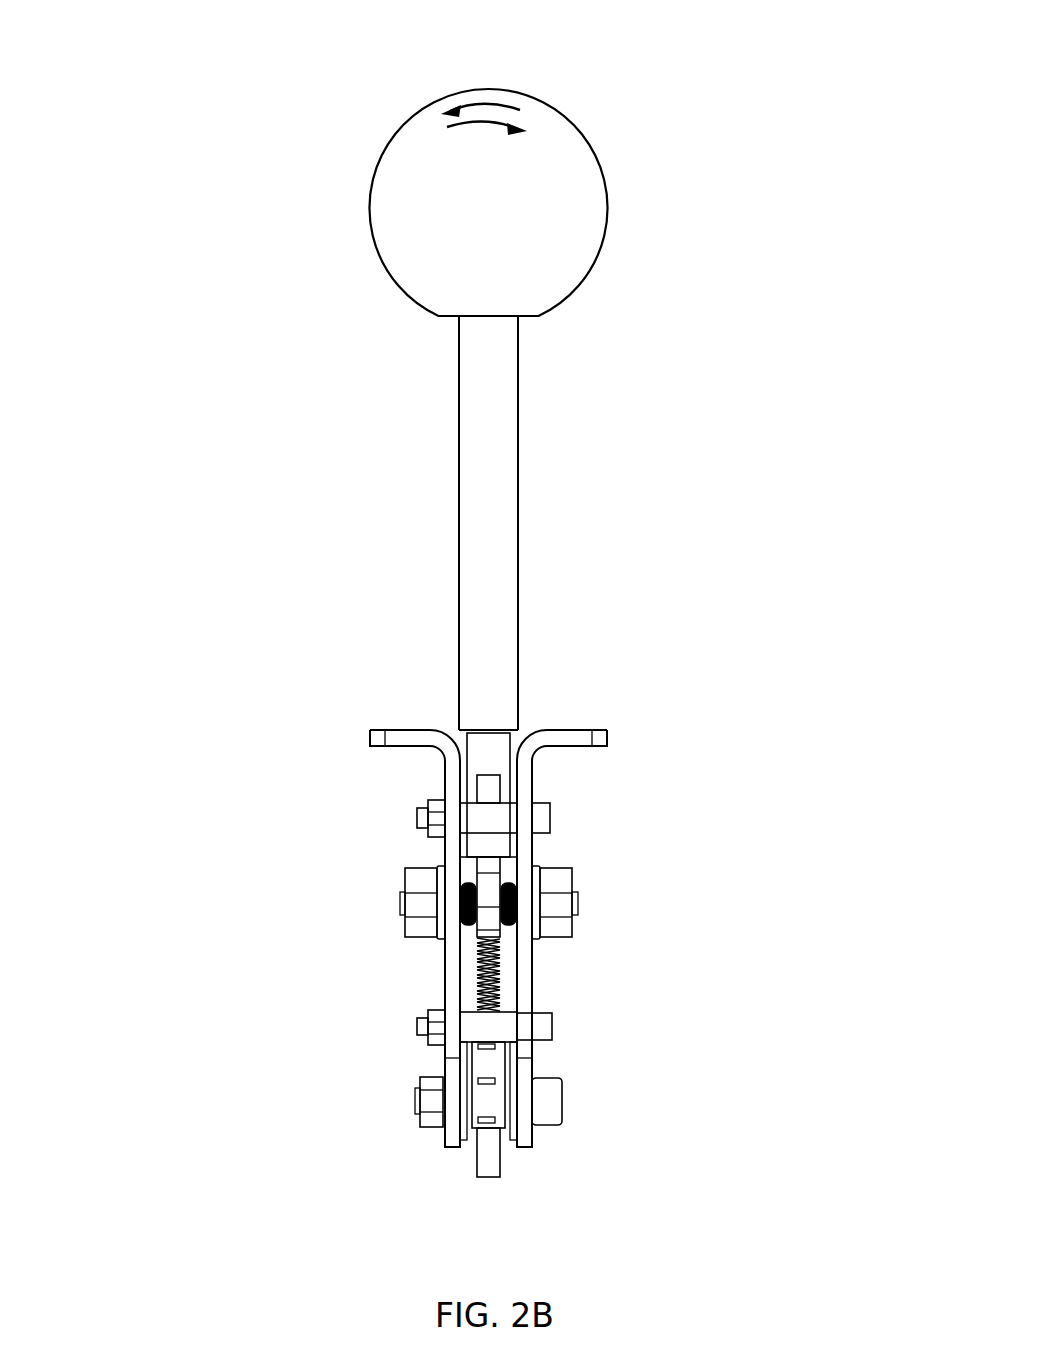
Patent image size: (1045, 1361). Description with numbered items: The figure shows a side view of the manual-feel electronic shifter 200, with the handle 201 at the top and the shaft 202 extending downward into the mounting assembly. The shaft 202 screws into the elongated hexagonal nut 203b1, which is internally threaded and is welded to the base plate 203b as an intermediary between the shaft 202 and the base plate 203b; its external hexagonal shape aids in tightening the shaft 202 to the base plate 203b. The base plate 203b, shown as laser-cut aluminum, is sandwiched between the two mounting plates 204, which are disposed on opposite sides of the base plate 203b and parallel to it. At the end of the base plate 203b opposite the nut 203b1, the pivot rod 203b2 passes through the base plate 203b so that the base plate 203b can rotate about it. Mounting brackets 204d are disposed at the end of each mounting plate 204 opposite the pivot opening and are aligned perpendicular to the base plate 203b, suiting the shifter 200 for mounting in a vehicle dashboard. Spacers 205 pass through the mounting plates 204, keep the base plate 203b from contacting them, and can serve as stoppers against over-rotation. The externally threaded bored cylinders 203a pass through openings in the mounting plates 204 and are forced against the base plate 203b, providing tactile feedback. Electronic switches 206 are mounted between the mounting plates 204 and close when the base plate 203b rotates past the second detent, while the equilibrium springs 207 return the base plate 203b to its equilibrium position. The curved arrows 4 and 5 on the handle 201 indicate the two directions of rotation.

The shifter 200 is at (140, 60).
The handle 201 is at (539, 202).
The shaft 202 is at (519, 497).
The externally threaded bored cylinders 203a is at (466, 932).
The base plate 203b is at (500, 983).
The elongated hexagonal nut 203b1 is at (524, 729).
The pivot rod 203b2 is at (508, 1117).
The mounting plates 204 is at (443, 995).
The mounting brackets 204d is at (368, 737).
The spacers 205 is at (505, 802).
The electronic switches 206 is at (467, 1125).
The equilibrium springs 207 is at (503, 968).
The rotation direction arrow 4 is at (466, 117).
The rotation direction arrow 5 is at (497, 131).